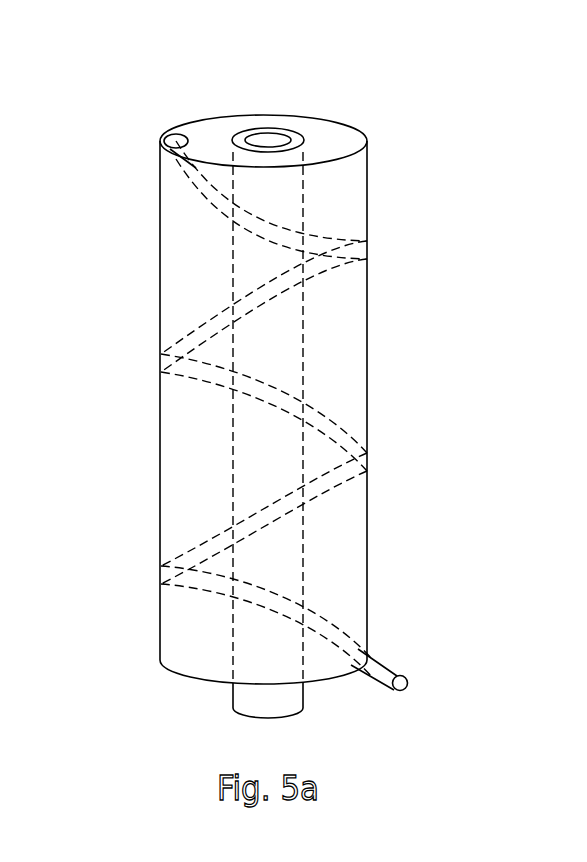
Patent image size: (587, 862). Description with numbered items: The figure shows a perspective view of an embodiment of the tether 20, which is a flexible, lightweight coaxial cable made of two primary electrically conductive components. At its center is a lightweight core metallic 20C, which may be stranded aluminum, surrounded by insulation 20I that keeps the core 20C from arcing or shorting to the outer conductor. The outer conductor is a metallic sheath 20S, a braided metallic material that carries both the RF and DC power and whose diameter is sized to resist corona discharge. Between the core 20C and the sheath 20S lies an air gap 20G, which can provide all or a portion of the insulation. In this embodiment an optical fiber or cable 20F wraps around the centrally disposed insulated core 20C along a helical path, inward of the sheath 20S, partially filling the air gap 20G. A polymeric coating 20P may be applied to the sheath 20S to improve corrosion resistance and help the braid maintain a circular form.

The tether 20 is at (259, 361).
The core metallic 20C is at (270, 132).
The optical fiber or cable 20F is at (258, 238).
The air gap 20G is at (331, 131).
The insulation 20I is at (213, 146).
The polymeric coating 20P is at (353, 553).
The metallic sheath 20S is at (367, 130).